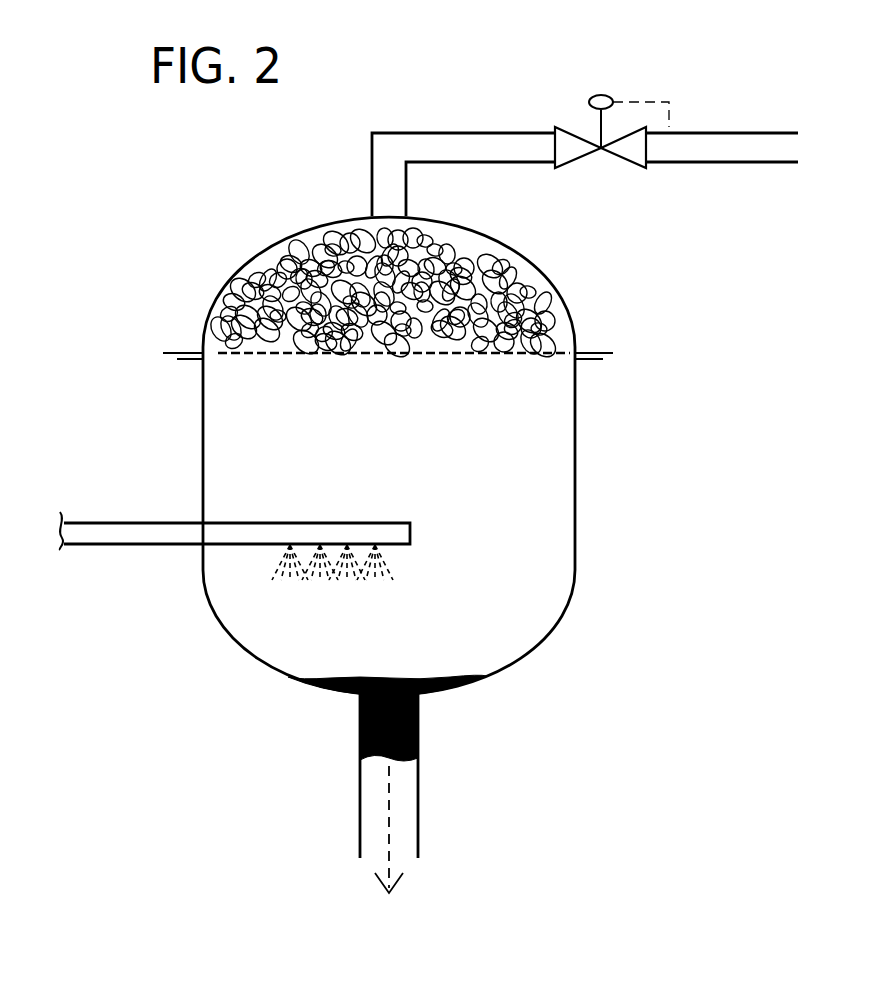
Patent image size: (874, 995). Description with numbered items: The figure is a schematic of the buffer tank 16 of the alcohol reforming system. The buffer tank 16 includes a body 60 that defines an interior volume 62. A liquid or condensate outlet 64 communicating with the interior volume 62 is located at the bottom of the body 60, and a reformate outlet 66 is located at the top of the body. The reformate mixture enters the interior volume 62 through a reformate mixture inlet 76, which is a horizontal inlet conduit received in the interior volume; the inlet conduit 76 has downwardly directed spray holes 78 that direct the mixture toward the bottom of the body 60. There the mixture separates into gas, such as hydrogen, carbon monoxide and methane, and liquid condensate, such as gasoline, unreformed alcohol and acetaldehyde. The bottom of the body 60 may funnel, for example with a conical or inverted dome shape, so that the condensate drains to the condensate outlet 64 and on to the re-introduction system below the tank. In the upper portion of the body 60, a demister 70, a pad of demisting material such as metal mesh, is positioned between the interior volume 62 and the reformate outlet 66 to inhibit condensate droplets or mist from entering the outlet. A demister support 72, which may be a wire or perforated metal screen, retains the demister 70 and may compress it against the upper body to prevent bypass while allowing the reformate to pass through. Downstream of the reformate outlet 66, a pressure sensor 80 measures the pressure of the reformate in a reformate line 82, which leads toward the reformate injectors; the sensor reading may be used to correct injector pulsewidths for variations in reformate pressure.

The buffer tank 16 is at (640, 420).
The body 60 is at (575, 532).
The interior volume 62 is at (297, 418).
The condensate outlet 64 is at (418, 797).
The reformate outlet 66 is at (372, 173).
The demister 70 is at (520, 285).
The demister support 72 is at (507, 356).
The reformate mixture inlet 76 is at (410, 523).
The spray holes 78 is at (356, 580).
The pressure sensor 80 is at (605, 93).
The reformate line 82 is at (443, 133).